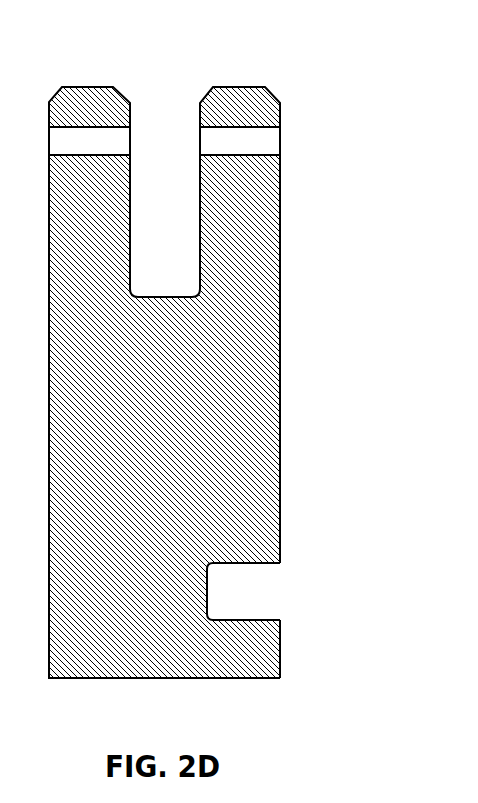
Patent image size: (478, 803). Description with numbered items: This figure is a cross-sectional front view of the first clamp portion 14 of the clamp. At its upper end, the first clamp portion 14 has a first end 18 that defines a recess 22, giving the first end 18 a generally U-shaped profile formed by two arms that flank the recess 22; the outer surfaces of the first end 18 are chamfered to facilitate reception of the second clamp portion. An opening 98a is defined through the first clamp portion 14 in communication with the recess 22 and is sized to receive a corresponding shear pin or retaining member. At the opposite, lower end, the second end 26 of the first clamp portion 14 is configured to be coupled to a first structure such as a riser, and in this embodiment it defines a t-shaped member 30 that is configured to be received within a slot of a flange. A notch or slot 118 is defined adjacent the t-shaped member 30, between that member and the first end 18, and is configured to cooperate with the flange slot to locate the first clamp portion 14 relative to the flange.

The first end 18 is at (76, 70).
The first clamp portion 14 is at (233, 53).
The opening 98a is at (260, 138).
The recess 22 is at (200, 184).
The notch or slot 118 is at (207, 602).
The second end 26 is at (313, 622).
The t-shaped member 30 is at (140, 442).